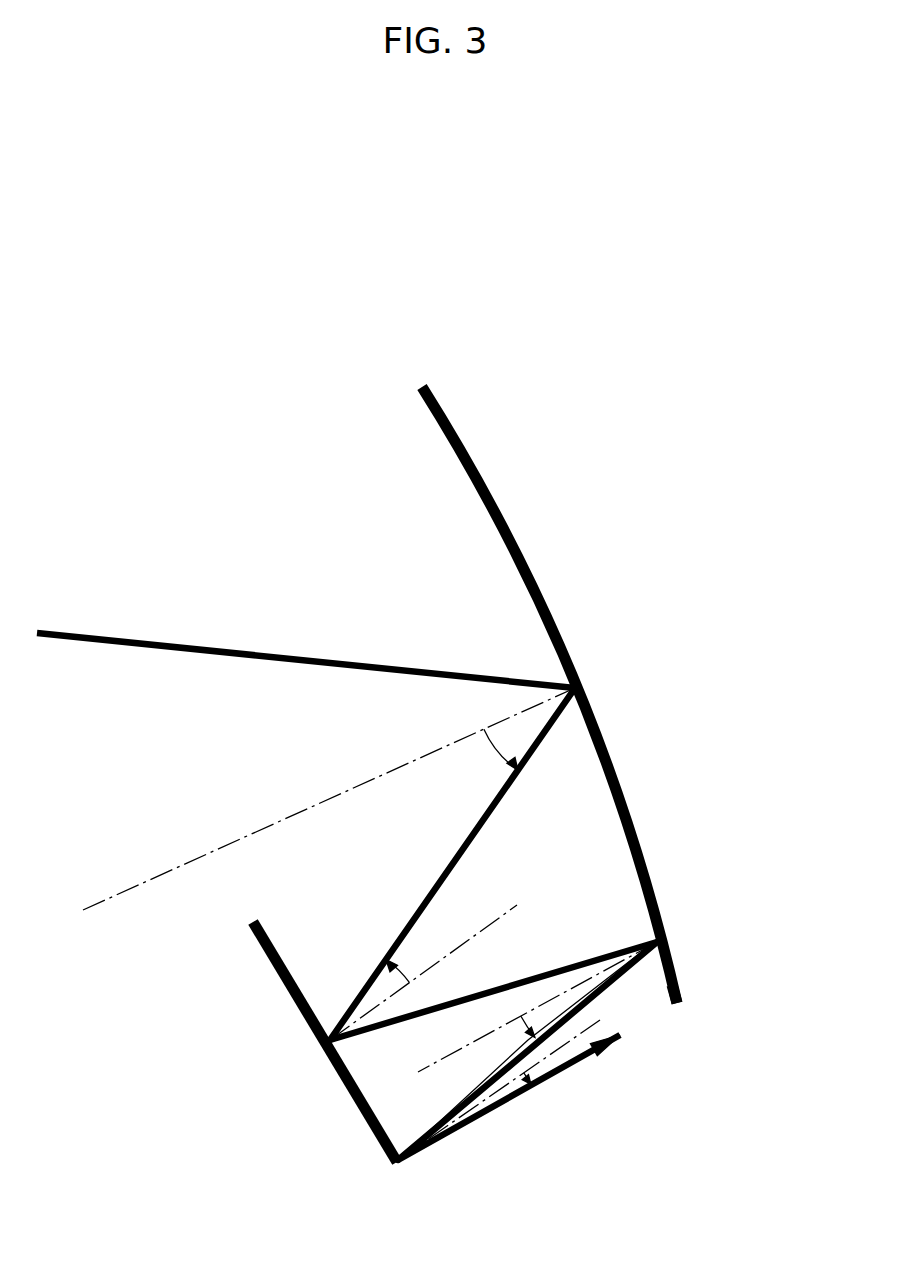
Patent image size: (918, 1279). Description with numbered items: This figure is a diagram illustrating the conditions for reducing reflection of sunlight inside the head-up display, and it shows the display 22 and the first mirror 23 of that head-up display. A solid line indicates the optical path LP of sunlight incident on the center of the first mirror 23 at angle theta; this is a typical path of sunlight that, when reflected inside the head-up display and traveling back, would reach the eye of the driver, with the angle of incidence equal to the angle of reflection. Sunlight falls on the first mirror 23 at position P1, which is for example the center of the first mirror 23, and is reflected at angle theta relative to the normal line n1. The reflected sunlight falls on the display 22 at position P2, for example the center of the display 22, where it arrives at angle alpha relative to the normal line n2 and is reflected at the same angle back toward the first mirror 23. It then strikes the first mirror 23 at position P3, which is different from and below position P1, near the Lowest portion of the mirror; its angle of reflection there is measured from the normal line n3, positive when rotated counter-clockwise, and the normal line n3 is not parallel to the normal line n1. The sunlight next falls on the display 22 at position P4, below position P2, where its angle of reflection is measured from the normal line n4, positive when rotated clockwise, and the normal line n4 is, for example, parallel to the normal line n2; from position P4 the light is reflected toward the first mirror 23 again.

The first mirror 23 is at (502, 507).
The display 22 is at (265, 955).
The optical path LP is at (185, 645).
The position P1 is at (590, 680).
The position P2 is at (318, 1050).
The position P3 is at (673, 935).
The position P4 is at (393, 1167).
The normal line n1 is at (237, 837).
The normal line n2 is at (513, 912).
The normal line n3 is at (417, 1062).
The normal line n4 is at (570, 1060).
The lowest portion of concave mirror Lowest is at (688, 999).